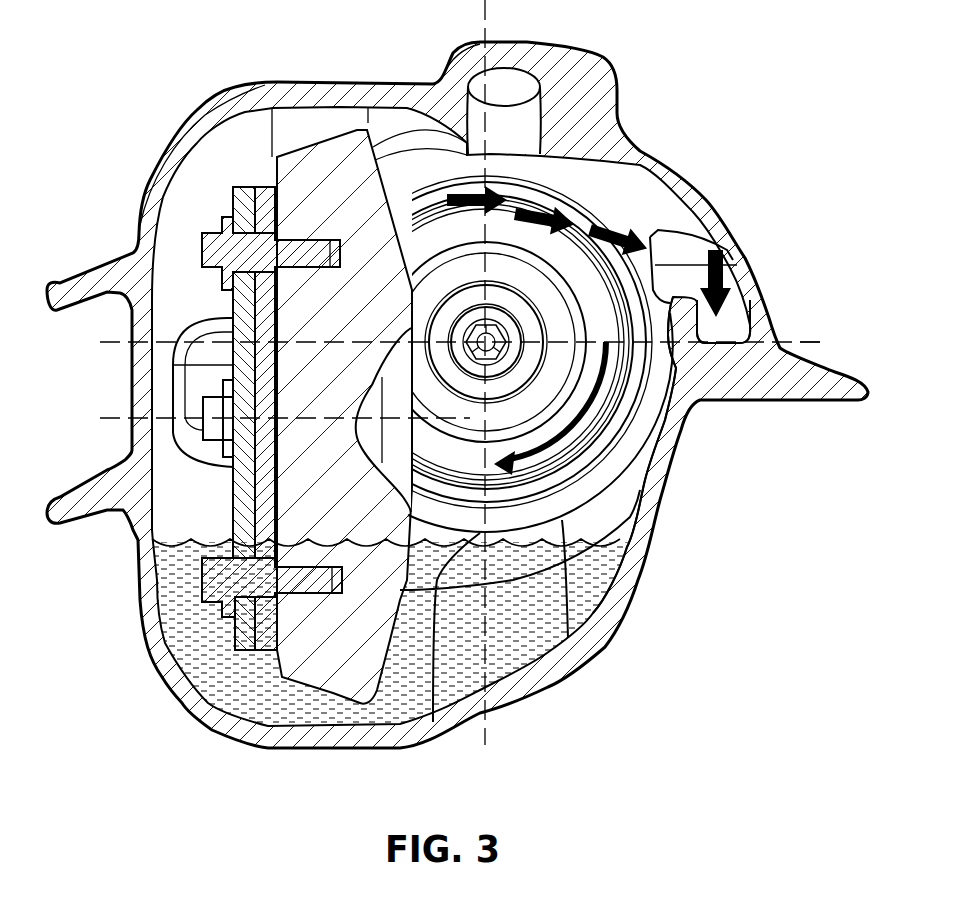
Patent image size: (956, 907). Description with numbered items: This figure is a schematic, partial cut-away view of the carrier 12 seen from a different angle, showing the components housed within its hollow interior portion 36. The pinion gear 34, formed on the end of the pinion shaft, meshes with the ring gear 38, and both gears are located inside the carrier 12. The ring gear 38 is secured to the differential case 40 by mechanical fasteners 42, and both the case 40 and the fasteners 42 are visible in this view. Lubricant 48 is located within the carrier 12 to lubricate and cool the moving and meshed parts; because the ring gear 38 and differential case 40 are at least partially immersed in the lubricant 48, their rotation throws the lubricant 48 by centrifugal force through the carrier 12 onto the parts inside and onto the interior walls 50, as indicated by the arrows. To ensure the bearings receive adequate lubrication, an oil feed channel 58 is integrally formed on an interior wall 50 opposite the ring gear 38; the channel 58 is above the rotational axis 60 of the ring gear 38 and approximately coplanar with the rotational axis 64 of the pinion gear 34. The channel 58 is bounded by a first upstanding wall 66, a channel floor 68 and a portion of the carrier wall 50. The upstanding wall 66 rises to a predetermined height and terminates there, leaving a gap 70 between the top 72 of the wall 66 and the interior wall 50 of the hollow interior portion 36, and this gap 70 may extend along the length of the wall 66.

The carrier 12 is at (650, 150).
The pinion gear 34 is at (600, 430).
The hollow interior portion 36 is at (217, 165).
The ring gear 38 is at (317, 137).
The differential case 40 is at (233, 203).
The mechanical fasteners 42 is at (202, 240).
The lubricant 48 is at (620, 538).
The interior walls 50 is at (150, 460).
The oil feed channel 58 is at (740, 300).
The rotational axis 60 is at (113, 418).
The rotational axis 64 is at (803, 340).
The first upstanding wall 66 is at (690, 357).
The channel floor 68 is at (717, 345).
The gap 70 is at (688, 257).
The top 72 is at (693, 300).